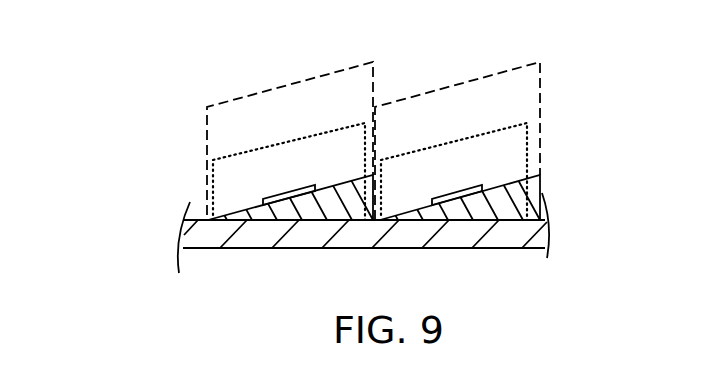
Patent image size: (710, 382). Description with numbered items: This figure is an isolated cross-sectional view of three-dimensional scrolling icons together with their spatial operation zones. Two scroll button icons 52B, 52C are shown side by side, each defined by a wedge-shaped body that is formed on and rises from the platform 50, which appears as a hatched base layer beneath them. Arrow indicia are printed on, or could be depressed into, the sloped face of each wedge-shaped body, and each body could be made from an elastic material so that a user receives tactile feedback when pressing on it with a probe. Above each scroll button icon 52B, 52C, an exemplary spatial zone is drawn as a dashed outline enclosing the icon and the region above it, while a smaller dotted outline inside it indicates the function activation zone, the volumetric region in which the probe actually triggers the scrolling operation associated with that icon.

The platform 50 is at (405, 235).
The scroll button icon 52B is at (559, 167).
The scroll button icon 52C is at (187, 193).